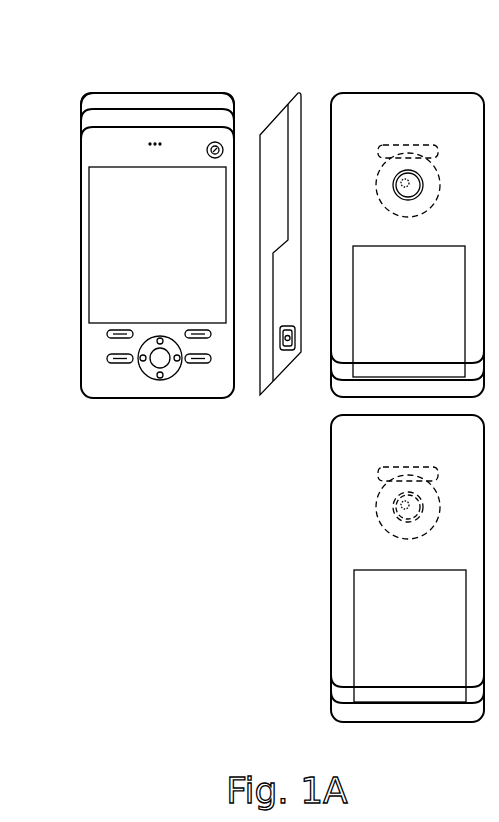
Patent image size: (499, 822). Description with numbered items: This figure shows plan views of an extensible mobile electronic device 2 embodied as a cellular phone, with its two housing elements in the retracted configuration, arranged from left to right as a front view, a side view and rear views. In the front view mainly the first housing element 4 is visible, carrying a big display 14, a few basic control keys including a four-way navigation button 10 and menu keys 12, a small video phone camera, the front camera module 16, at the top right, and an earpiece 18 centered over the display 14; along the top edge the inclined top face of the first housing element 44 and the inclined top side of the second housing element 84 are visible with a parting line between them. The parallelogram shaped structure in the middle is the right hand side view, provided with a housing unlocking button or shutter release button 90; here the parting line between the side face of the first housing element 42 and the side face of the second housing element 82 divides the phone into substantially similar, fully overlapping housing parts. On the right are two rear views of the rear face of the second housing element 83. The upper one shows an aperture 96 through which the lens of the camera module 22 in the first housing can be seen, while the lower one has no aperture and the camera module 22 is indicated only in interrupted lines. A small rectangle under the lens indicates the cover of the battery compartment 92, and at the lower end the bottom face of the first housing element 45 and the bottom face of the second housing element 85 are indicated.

The extensible mobile electronic device 2 is at (105, 410).
The first housing element 4 is at (165, 362).
The four-way navigation button 10 is at (150, 373).
The menu keys 12 is at (120, 363).
The display 14 is at (157, 245).
The front camera module 16 is at (226, 150).
The earpiece 18 is at (170, 135).
The camera module 22 is at (412, 523).
The side face of first housing element 42 is at (280, 244).
The top face of first housing element 44 is at (127, 120).
The bottom face of first housing element 45 is at (360, 713).
The side face of second housing element 82 is at (287, 309).
The rear face of second housing element 83 is at (407, 407).
The top face of second housing element 84 is at (99, 101).
The bottom face of second housing element 85 is at (347, 694).
The release button 90 is at (290, 350).
The battery case 92 is at (409, 474).
The aperture for camera module 96 is at (412, 178).